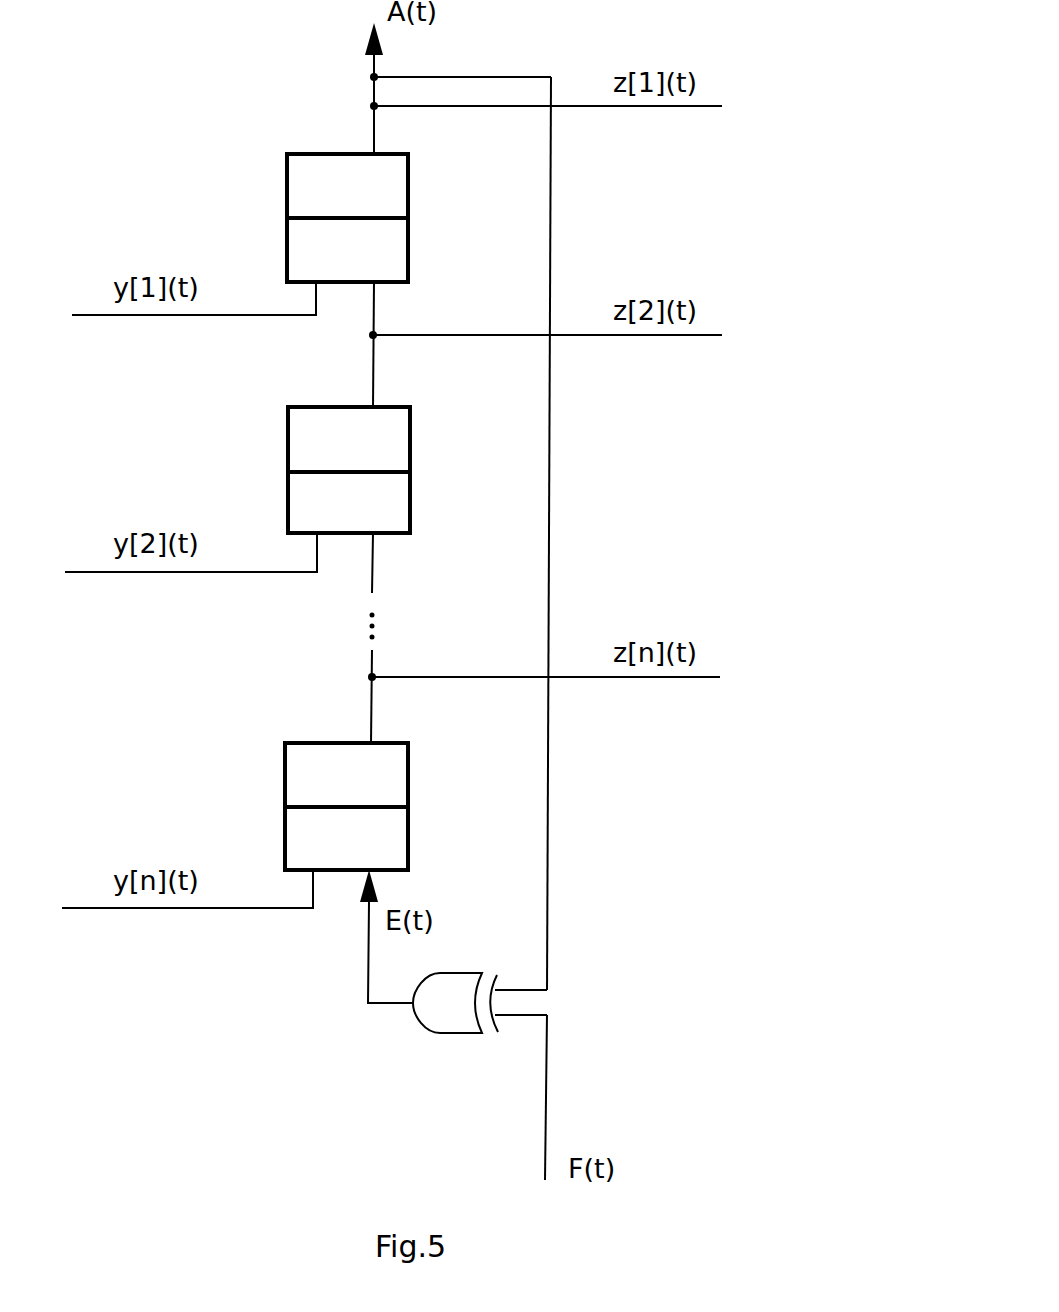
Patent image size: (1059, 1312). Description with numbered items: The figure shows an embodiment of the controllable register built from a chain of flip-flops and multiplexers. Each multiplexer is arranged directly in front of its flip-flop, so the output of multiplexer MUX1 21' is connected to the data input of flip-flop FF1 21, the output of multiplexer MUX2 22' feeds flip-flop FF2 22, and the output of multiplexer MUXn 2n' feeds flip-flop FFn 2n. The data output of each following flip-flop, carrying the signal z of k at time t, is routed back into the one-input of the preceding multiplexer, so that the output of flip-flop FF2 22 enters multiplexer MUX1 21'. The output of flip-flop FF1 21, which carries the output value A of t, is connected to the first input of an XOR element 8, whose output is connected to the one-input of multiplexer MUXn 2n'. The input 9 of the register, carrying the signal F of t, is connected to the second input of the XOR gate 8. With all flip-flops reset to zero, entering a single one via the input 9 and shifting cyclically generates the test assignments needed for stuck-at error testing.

The flip-flop FF1 21 is at (370, 165).
The multiplexer MUX1 21' is at (374, 228).
The flip-flop FF2 22 is at (371, 418).
The multiplexer MUX2 22' is at (374, 480).
The flip-flop FFn 2n is at (368, 756).
The multiplexer MUXn 2n' is at (371, 819).
The XOR element 8 is at (453, 988).
The input of the controllable register 9 is at (546, 1113).